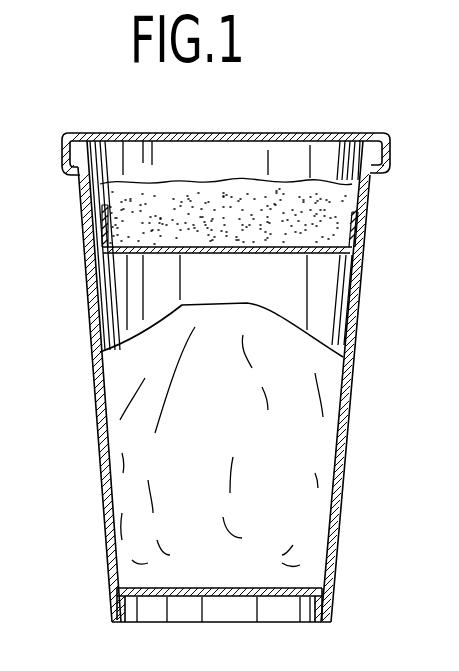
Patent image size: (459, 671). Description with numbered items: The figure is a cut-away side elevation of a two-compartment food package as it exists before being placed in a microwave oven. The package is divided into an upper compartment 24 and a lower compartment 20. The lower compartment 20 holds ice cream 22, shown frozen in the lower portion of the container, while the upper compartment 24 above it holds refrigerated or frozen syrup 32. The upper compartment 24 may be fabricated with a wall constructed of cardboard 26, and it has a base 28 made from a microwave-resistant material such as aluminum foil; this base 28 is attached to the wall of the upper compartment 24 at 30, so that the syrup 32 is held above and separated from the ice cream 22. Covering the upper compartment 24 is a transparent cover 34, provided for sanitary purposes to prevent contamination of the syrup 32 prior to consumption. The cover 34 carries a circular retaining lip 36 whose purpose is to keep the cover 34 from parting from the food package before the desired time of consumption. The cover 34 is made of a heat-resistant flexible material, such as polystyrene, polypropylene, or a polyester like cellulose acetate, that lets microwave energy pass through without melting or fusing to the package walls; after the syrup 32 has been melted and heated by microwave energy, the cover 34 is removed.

The lower compartment 20 is at (352, 312).
The ice cream 22 is at (233, 443).
The upper compartment 24 is at (322, 160).
The cardboard 26 is at (152, 158).
The base 28 is at (167, 250).
The attachment point 30 is at (356, 212).
The syrup 32 is at (104, 207).
The transparent cover 34 is at (266, 134).
The circular retaining lip 36 is at (391, 161).